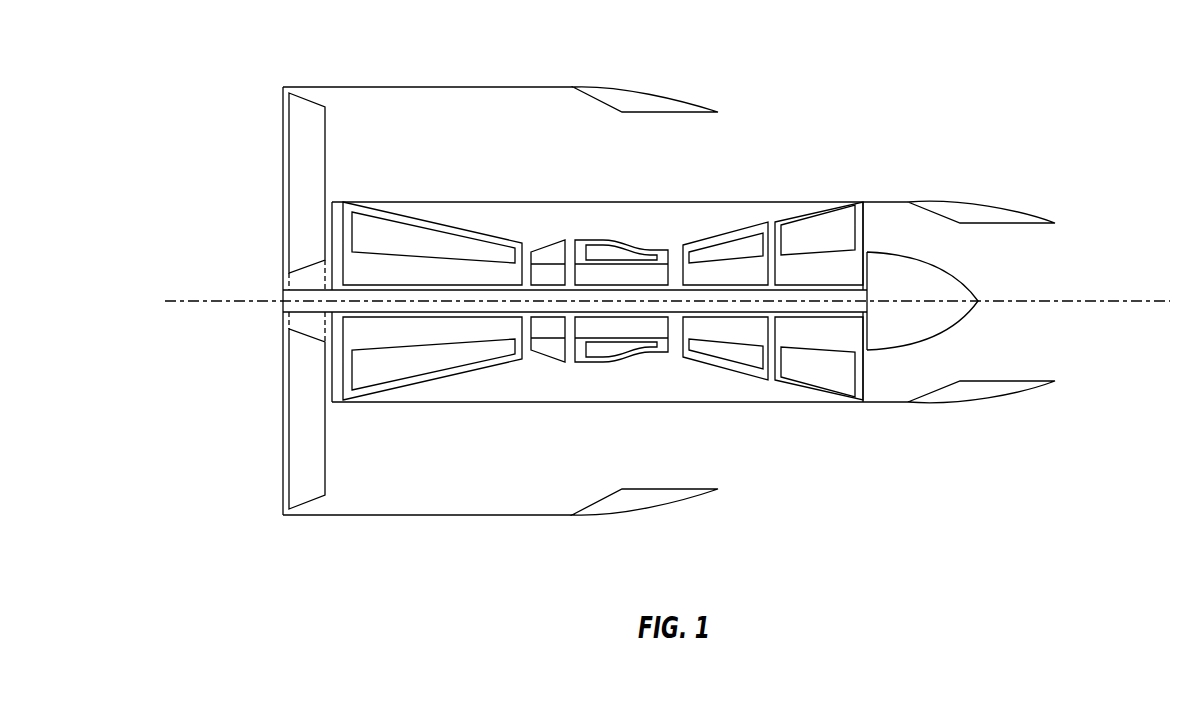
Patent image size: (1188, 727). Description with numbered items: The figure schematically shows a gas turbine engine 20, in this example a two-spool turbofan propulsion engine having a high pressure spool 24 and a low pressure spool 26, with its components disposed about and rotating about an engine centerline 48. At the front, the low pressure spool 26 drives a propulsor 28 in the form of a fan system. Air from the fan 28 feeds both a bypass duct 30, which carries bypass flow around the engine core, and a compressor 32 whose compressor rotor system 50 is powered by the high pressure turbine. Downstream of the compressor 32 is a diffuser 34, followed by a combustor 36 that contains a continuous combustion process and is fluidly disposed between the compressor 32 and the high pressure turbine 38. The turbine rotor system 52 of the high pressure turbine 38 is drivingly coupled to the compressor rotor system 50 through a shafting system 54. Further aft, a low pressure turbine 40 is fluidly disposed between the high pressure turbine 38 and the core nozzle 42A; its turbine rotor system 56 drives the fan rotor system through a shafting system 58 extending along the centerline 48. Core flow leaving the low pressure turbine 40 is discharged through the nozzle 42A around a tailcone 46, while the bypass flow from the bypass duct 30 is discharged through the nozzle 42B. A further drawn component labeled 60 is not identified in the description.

The gas turbine engine 20 is at (965, 70).
The high pressure spool 24 is at (710, 158).
The low pressure spool 26 is at (803, 141).
The propulsor 28 is at (283, 408).
The bypass duct 30 is at (410, 495).
The compressor 32 is at (482, 368).
The diffuser 34 is at (547, 244).
The combustor 36 is at (615, 237).
The high pressure turbine 38 is at (720, 370).
The low pressure turbine 40 is at (807, 388).
The nozzle 42A is at (1017, 387).
The nozzle 42B is at (660, 507).
The tailcone 46 is at (943, 265).
The engine centerline 48 is at (1067, 301).
The compressor rotor system 50 is at (463, 236).
The turbine rotor system 52 is at (742, 233).
The shafting system 54 is at (672, 352).
The turbine rotor system 56 is at (808, 213).
The shafting system 58 is at (787, 313).
The combustor liner 60 is at (598, 357).